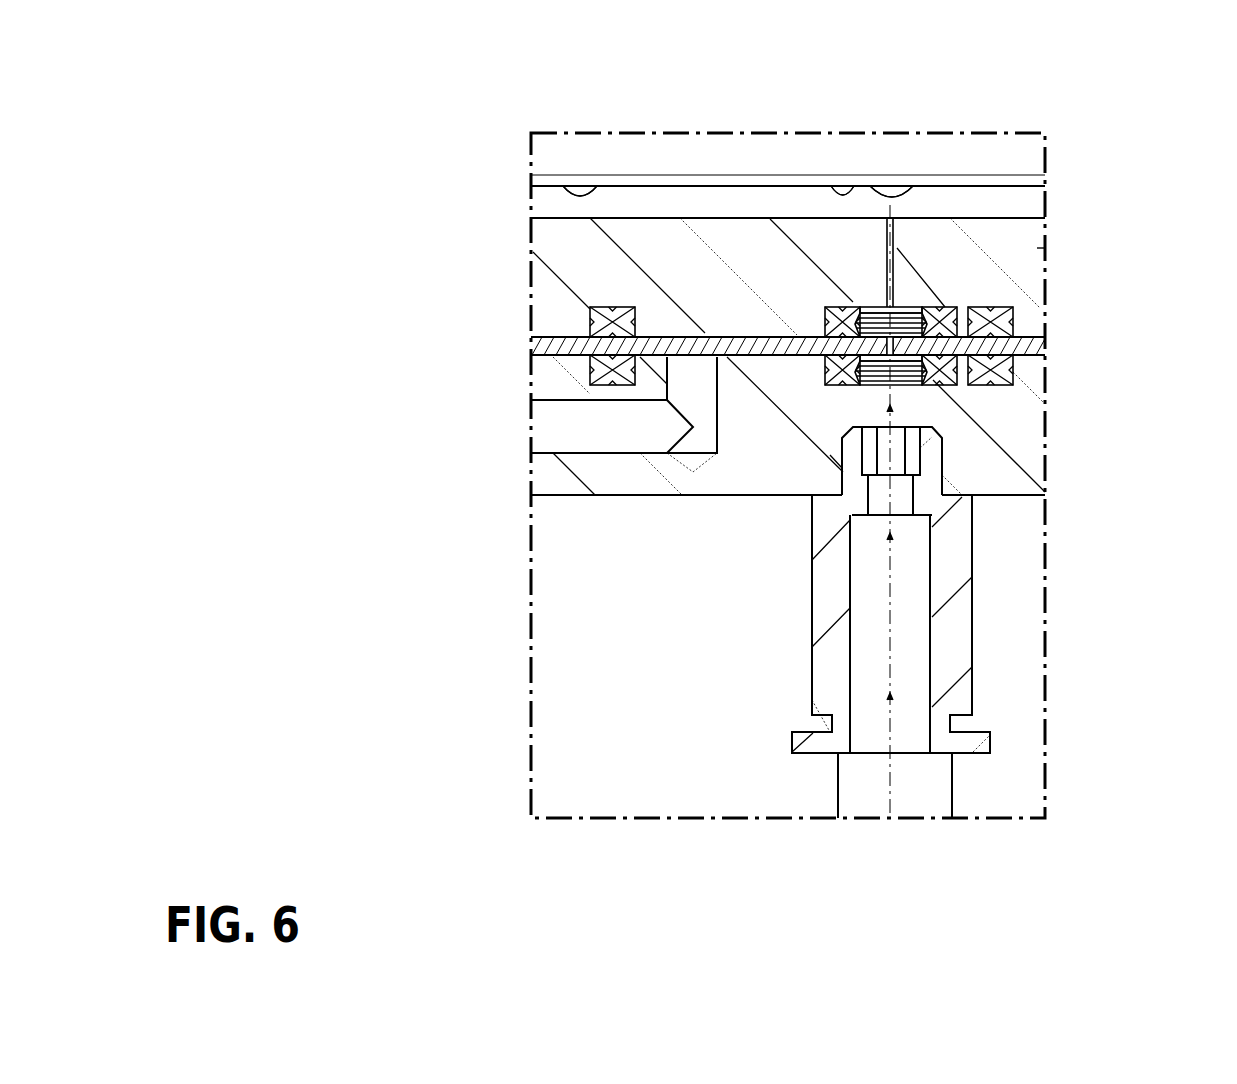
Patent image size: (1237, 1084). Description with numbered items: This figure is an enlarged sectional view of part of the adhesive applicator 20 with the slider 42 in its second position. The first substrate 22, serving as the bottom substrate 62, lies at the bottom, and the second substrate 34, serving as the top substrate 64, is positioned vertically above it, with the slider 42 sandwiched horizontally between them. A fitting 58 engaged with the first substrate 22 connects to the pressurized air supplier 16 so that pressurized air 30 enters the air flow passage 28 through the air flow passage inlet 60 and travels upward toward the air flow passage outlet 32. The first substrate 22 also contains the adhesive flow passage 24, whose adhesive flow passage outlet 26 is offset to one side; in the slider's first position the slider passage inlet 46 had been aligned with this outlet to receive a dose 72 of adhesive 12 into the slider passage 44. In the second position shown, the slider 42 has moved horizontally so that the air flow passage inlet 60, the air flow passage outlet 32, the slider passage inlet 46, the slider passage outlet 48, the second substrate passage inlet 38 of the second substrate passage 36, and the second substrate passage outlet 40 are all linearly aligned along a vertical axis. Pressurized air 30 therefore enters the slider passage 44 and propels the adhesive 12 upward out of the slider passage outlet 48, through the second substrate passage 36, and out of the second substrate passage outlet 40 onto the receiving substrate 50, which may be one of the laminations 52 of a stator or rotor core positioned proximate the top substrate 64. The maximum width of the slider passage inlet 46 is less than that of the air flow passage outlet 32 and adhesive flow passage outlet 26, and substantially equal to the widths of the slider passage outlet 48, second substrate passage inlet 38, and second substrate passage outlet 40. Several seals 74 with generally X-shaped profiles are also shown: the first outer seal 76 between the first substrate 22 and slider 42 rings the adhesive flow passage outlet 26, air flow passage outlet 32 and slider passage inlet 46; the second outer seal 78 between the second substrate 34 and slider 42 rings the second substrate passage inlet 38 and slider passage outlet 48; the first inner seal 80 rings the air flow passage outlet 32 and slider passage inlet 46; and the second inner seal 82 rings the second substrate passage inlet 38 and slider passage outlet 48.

The adhesive 12 is at (895, 250).
The pressurized air supplier 16 is at (943, 790).
The adhesive applicator 20 is at (1050, 224).
The first substrate 22 is at (1030, 465).
The adhesive flow passage 24 is at (637, 453).
The adhesive flow passage outlet 26 is at (713, 345).
The air flow passage 28 is at (922, 420).
The pressurized air 30 is at (890, 667).
The air flow passage outlet 32 is at (907, 394).
The second substrate 34 is at (1040, 248).
The second substrate passage 36 is at (882, 302).
The second substrate passage inlet 38 is at (878, 260).
The second substrate passage outlet 40 is at (890, 210).
The slider 42 is at (763, 338).
The slider passage 44 is at (907, 345).
The slider passage inlet 46 is at (888, 360).
The slider passage outlet 48 is at (897, 330).
The receiving substrate 50 is at (833, 188).
The laminations 52 is at (566, 188).
The fitting 58 is at (957, 625).
The air flow passage inlet 60 is at (867, 499).
The bottom substrate 62 is at (997, 487).
The top substrate 64 is at (995, 222).
The dose 72 is at (913, 193).
The seals 74 is at (787, 457).
The first outer seal 76 is at (605, 373).
The second outer seal 78 is at (607, 323).
The first inner seal 80 is at (833, 375).
The second inner seal 82 is at (950, 312).